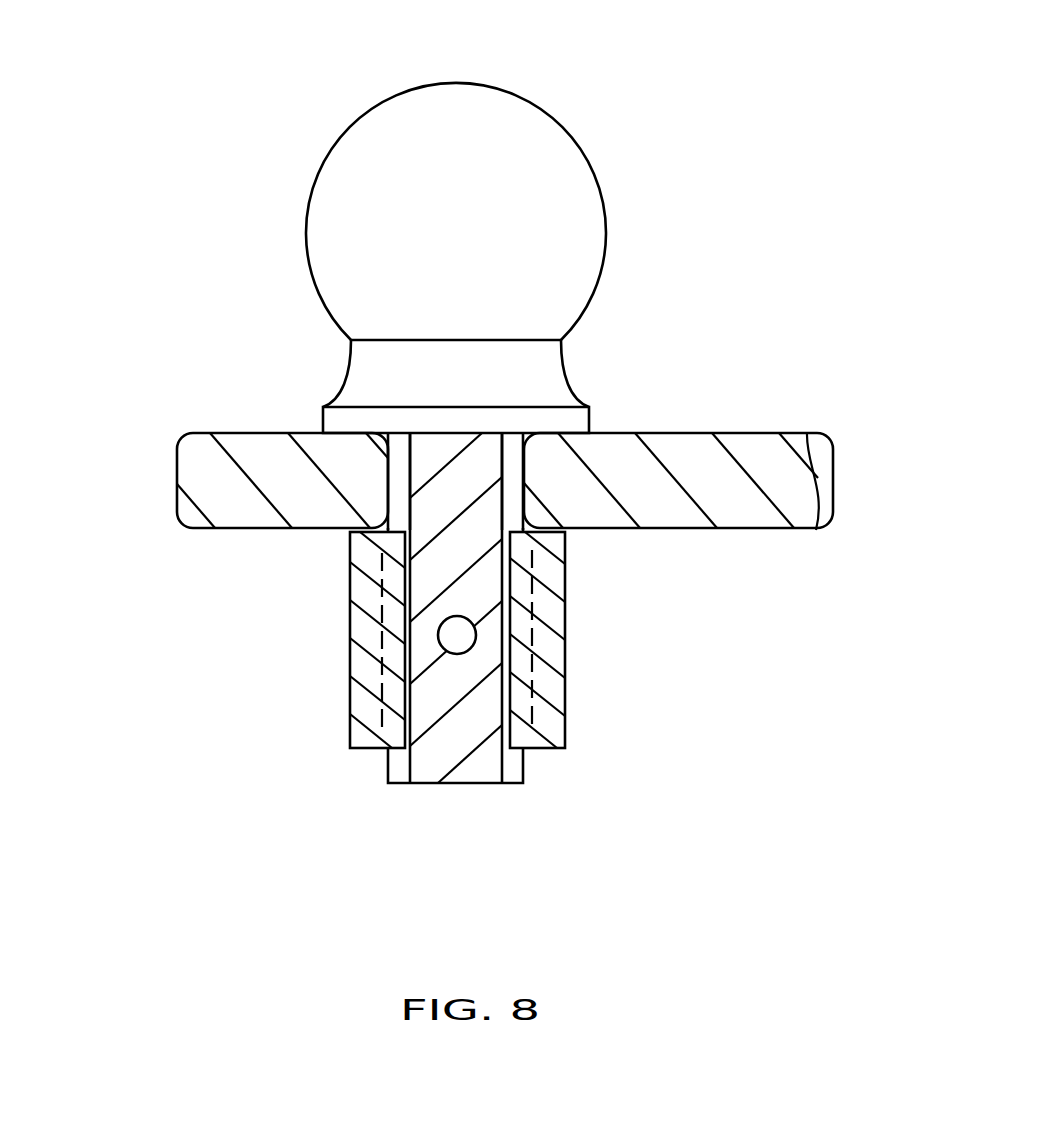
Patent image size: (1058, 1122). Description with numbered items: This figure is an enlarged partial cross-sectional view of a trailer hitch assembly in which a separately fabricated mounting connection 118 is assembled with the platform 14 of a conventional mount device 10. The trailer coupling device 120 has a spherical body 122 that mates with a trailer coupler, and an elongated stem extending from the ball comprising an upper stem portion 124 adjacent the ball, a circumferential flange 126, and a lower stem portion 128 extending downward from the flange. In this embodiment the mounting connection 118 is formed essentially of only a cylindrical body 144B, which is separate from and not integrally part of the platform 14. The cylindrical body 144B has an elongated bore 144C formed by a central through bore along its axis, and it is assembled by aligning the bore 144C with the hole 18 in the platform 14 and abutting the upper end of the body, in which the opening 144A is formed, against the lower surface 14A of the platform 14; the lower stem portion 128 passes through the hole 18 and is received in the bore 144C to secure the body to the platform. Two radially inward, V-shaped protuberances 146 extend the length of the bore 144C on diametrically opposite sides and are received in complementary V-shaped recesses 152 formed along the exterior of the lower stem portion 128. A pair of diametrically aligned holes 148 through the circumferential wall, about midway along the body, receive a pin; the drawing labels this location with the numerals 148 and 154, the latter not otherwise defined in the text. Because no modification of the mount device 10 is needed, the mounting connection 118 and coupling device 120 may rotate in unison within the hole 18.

The mount device 10 is at (473, 451).
The platform 14 is at (534, 425).
The lower surface 14A is at (708, 532).
The hole 18 is at (547, 374).
The mounting connection 118 is at (392, 621).
The trailer coupling device 120 is at (462, 229).
The spherical body 122 is at (456, 182).
The upper stem portion 124 is at (434, 360).
The circumferential flange 126 is at (404, 404).
The lower stem portion 128 is at (529, 608).
The opening 144A is at (232, 590).
The cylindrical body 144B is at (631, 640).
The bore 144C is at (465, 806).
The protuberances 146 is at (457, 672).
The holes 148 is at (579, 641).
The recesses 152 is at (461, 447).
The passage 154 is at (579, 641).